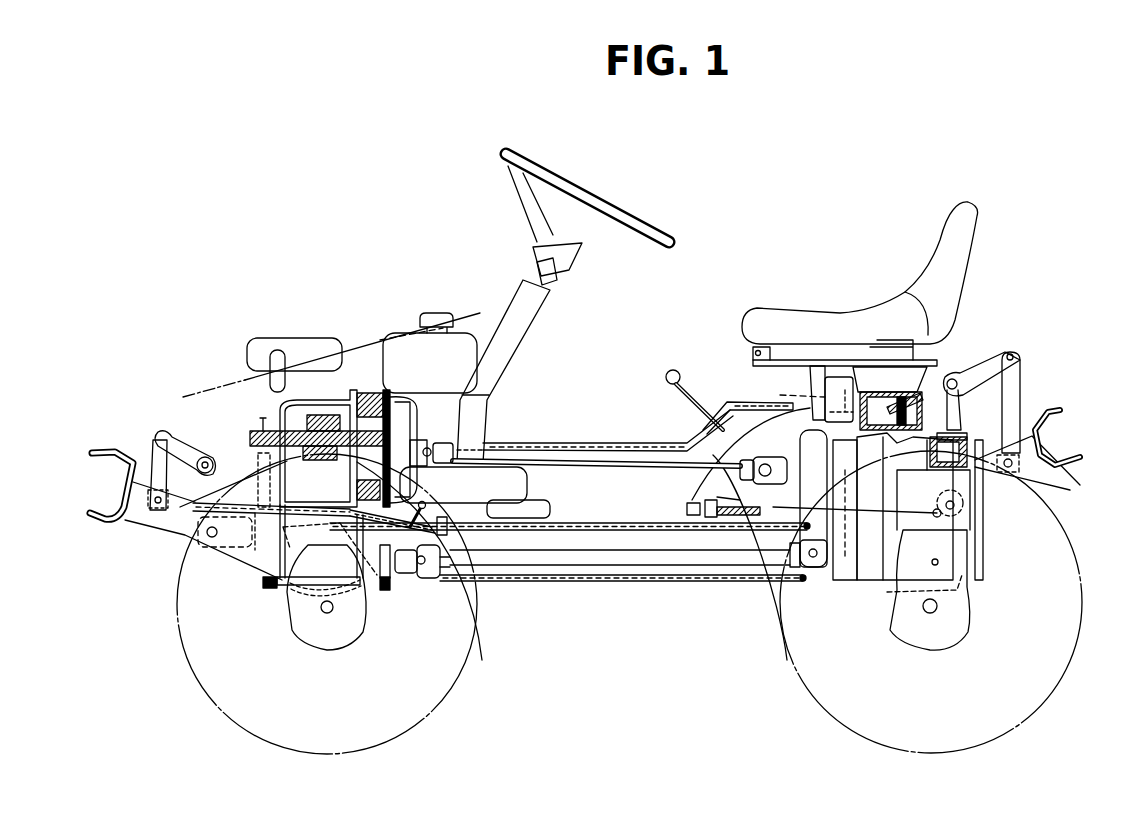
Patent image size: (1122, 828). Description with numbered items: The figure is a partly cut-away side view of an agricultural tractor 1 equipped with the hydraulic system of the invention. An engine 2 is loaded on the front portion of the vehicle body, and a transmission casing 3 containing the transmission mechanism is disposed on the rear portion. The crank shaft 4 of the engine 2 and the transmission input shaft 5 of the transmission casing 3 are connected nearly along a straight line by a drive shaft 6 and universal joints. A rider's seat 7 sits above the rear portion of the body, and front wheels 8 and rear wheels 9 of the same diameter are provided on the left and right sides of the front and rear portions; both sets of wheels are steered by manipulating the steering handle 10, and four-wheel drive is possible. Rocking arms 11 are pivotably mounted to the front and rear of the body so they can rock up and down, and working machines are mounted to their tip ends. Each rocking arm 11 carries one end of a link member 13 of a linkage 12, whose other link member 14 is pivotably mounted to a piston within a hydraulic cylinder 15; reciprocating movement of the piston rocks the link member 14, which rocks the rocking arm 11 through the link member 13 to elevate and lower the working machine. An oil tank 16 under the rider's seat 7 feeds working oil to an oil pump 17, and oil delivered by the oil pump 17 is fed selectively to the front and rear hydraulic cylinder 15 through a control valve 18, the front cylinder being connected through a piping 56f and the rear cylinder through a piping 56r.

The agricultural tractor 1 is at (750, 240).
The engine 2 is at (343, 387).
The transmission casing 3 is at (863, 573).
The crank shaft 4 is at (280, 430).
The transmission input shaft 5 is at (777, 553).
The drive shaft 6 is at (635, 463).
The rider's seat 7 is at (836, 316).
The front wheels 8 is at (467, 607).
The rear wheels 9 is at (780, 647).
The steering handle 10 is at (647, 219).
The rocking arm 11 is at (147, 515).
The linkage 12 is at (160, 431).
The link member 13 is at (1020, 398).
The link member 14 is at (983, 370).
The hydraulic cylinder 15 is at (925, 390).
The oil tank 16 is at (822, 396).
The oil pump 17 is at (778, 457).
The control valve 18 is at (707, 398).
The piping 56f is at (700, 432).
The piping 56r is at (822, 446).